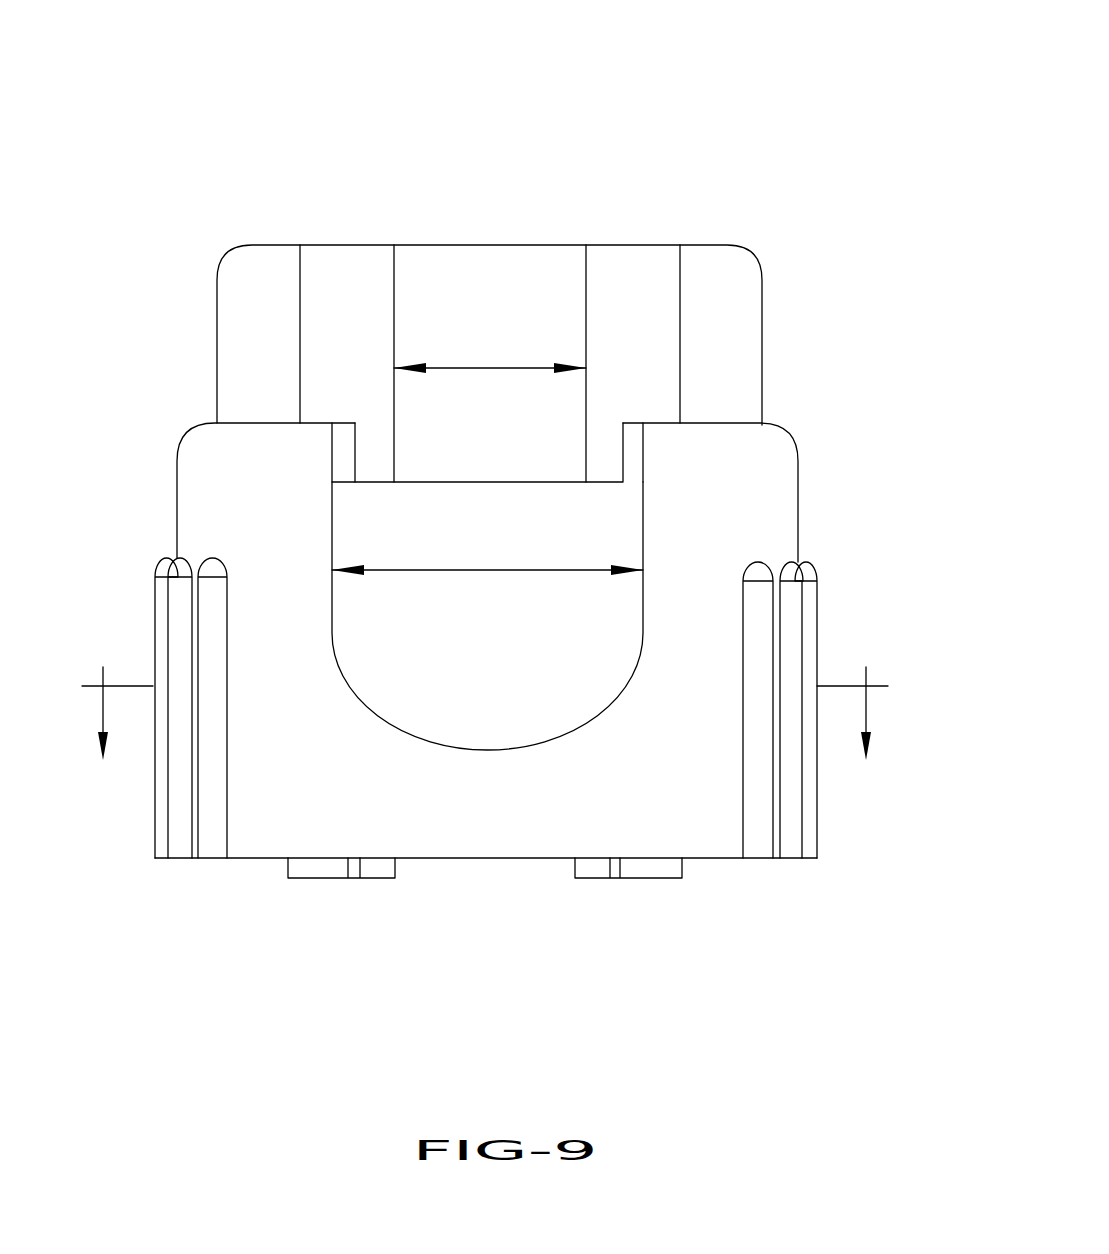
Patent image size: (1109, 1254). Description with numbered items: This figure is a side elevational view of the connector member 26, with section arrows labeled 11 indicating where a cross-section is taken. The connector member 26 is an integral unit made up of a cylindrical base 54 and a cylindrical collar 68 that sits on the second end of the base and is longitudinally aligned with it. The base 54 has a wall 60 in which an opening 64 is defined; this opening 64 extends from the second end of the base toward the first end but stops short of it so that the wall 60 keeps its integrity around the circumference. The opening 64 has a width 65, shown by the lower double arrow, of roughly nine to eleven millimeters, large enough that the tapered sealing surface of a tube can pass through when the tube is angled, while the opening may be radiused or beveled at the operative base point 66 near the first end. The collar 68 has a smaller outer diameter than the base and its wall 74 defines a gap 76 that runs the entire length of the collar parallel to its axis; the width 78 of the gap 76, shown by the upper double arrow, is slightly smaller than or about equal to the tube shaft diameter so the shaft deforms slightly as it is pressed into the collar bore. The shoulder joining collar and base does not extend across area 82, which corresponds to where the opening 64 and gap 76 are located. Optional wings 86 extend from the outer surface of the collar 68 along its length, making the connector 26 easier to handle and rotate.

The connector member 26 is at (717, 132).
The cylindrical base 54 is at (810, 557).
The wall 60 is at (283, 800).
The opening 64 is at (408, 613).
The width 65 is at (492, 568).
The operative base point 66 is at (490, 750).
The cylindrical collar 68 is at (685, 287).
The wall 74 is at (355, 362).
The gap 76 is at (545, 338).
The width 78 is at (488, 368).
The area 82 is at (602, 467).
The wings 86 is at (250, 352).
The section line 11- 11 is at (485, 733).